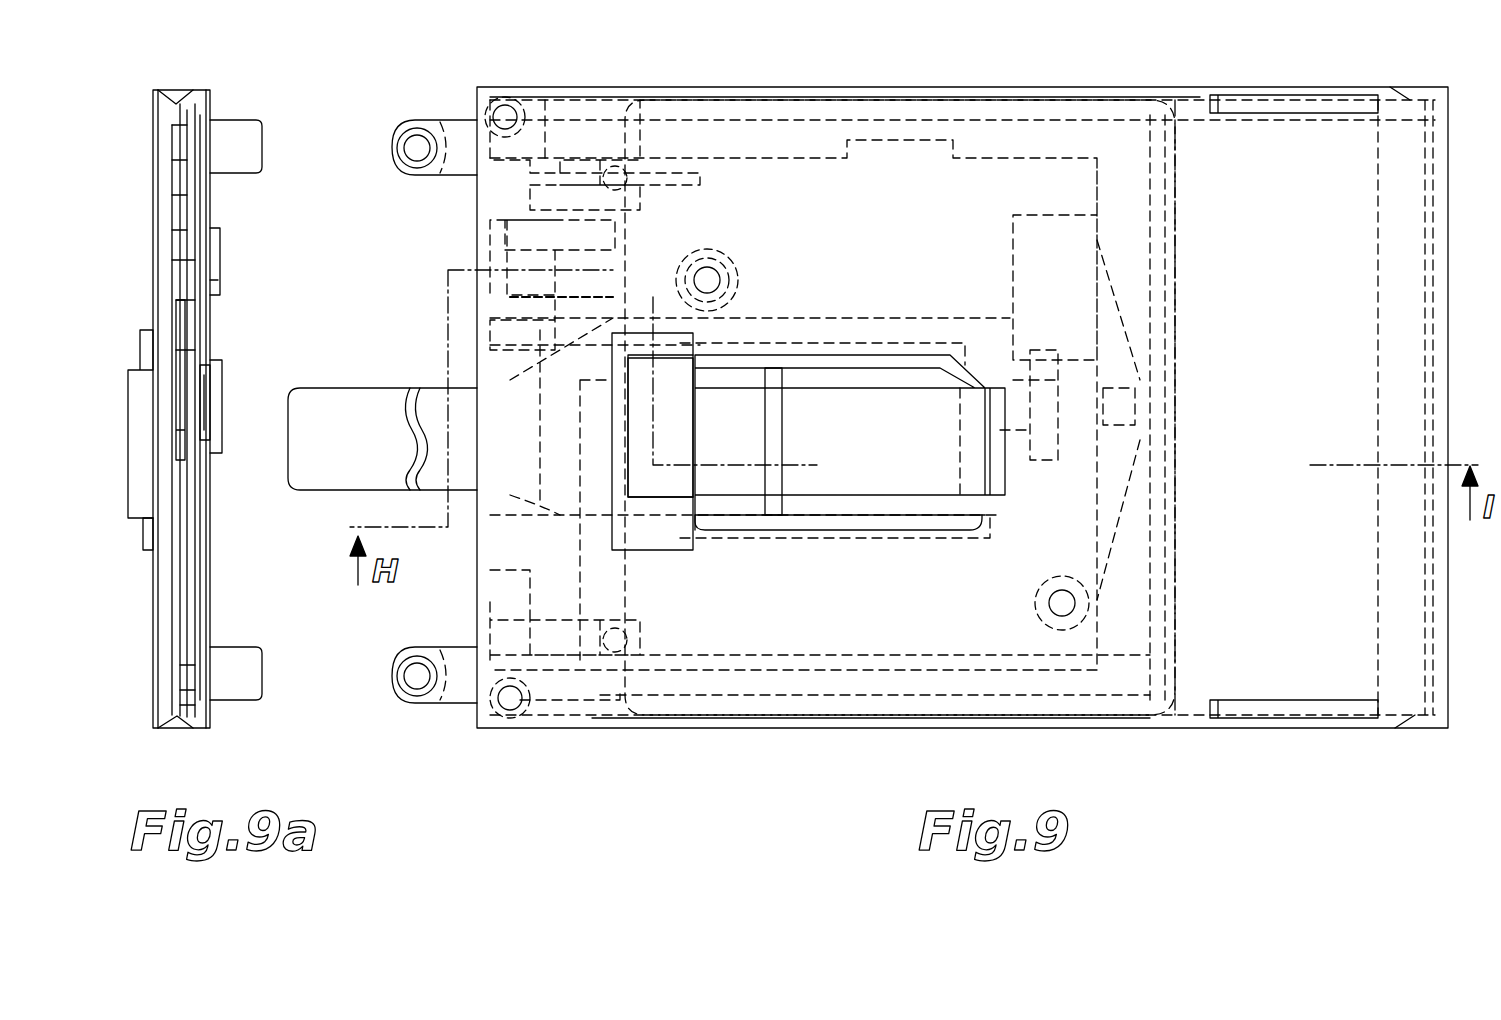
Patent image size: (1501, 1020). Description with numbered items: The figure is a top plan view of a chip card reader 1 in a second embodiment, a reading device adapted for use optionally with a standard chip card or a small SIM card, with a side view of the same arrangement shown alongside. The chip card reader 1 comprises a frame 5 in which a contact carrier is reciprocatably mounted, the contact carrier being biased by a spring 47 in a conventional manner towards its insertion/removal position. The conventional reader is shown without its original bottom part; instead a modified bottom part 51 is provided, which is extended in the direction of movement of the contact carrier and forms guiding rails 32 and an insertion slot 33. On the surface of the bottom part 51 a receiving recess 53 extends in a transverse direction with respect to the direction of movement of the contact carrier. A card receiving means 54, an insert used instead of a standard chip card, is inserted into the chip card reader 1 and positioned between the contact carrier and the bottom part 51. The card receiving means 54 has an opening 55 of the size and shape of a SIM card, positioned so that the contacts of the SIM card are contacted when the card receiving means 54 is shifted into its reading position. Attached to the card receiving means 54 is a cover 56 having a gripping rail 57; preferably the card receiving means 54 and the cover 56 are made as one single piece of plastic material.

In FIG. 9A, the chip card reader 1 is at (262, 246).
In FIG. 9, the chip card reader 1 is at (745, 700).
In FIG. 9A, the frame 5 is at (200, 606).
In FIG. 9, the guiding rails 32 is at (1278, 103).
In FIG. 9A, the insertion slot 33 is at (180, 548).
In FIG. 9, the insertion slot 33 is at (1428, 678).
In FIG. 9A, the spring 47 is at (215, 385).
In FIG. 9A, the bottom part 51 is at (165, 658).
In FIG. 9, the bottom part 51 is at (1200, 140).
In FIG. 9A, the receiving recess 53 is at (143, 540).
In FIG. 9, the receiving recess 53 is at (660, 530).
In FIG. 9, the card receiving means 54 is at (1175, 255).
In FIG. 9, the opening 55 is at (720, 372).
In FIG. 9, the cover 56 is at (862, 483).
In FIG. 9A, the gripping rail 57 is at (140, 392).
In FIG. 9, the gripping rail 57 is at (773, 372).